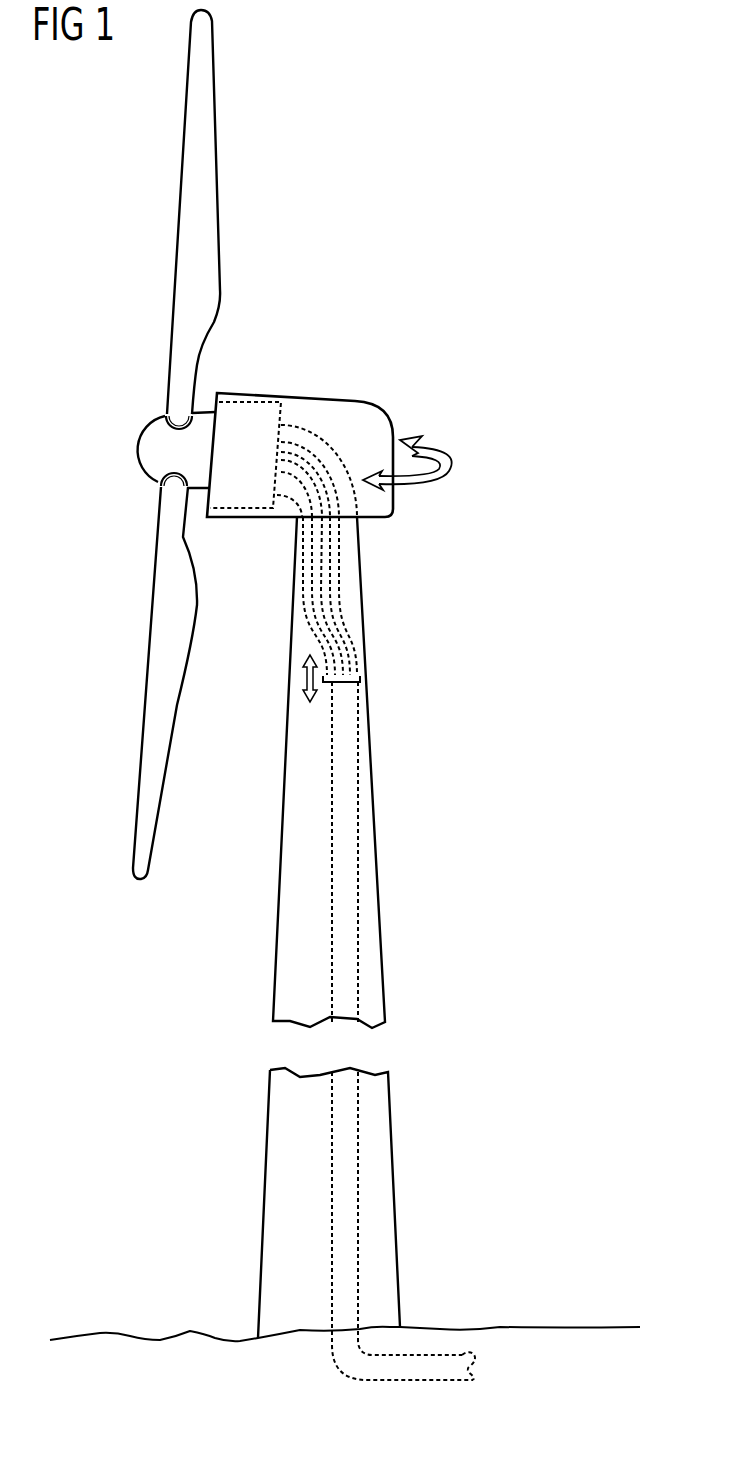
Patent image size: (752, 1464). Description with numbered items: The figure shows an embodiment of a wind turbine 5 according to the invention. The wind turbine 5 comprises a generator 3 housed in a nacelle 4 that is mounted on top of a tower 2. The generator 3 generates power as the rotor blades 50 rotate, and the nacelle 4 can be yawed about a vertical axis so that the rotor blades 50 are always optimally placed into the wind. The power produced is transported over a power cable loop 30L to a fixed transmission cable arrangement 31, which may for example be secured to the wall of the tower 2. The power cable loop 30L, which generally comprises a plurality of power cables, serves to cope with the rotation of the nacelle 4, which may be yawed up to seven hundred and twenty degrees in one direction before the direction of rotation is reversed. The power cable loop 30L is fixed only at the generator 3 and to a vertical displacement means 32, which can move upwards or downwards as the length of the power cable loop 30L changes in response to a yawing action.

The tower 2 is at (287, 1132).
The generator 3 is at (250, 399).
The nacelle 4 is at (360, 407).
The wind turbine 5 is at (364, 273).
The power cable loop 30L is at (333, 598).
The fixed transmission cable arrangement 31 is at (347, 862).
The vertical displacement means 32 is at (363, 678).
The rotor blades 50 is at (203, 111).